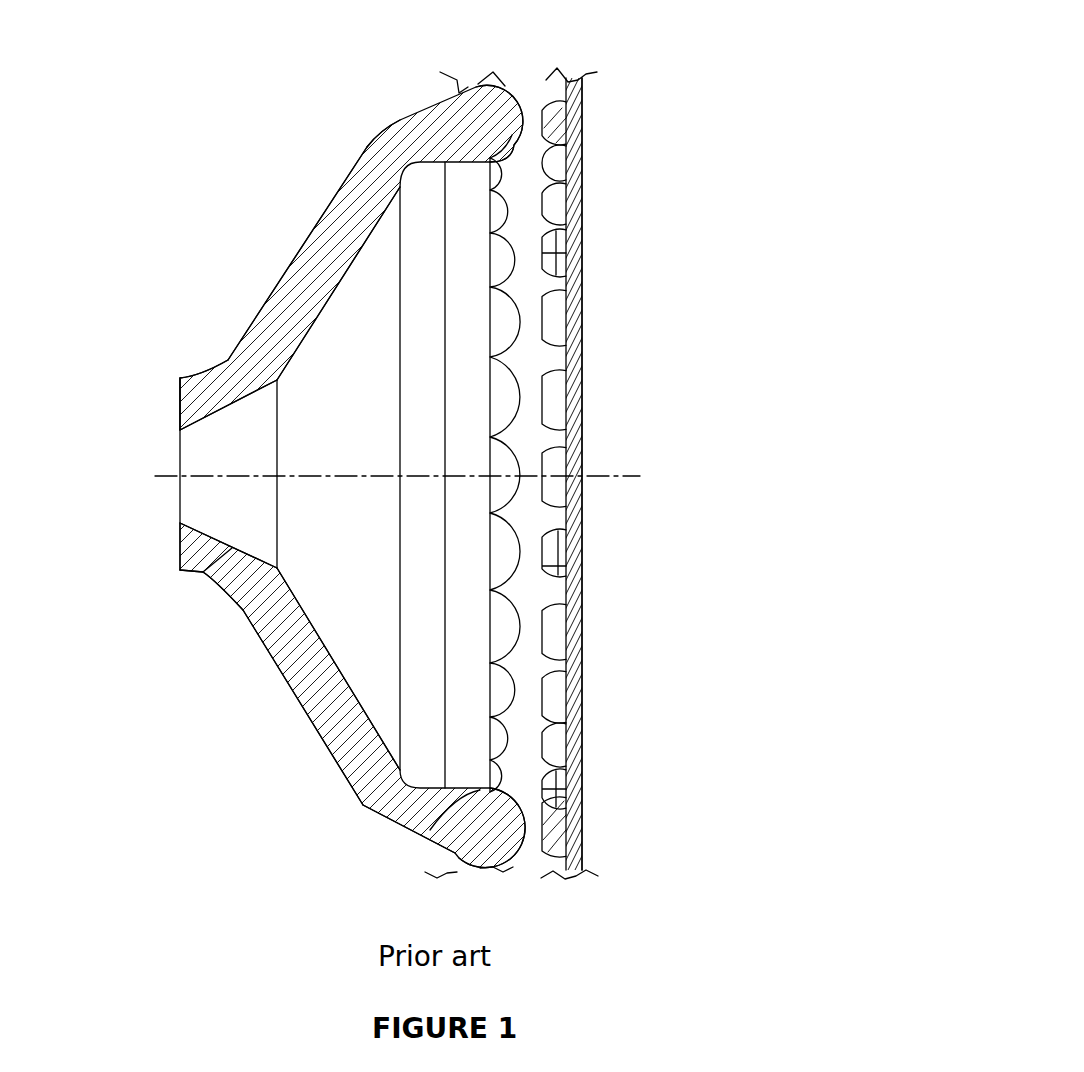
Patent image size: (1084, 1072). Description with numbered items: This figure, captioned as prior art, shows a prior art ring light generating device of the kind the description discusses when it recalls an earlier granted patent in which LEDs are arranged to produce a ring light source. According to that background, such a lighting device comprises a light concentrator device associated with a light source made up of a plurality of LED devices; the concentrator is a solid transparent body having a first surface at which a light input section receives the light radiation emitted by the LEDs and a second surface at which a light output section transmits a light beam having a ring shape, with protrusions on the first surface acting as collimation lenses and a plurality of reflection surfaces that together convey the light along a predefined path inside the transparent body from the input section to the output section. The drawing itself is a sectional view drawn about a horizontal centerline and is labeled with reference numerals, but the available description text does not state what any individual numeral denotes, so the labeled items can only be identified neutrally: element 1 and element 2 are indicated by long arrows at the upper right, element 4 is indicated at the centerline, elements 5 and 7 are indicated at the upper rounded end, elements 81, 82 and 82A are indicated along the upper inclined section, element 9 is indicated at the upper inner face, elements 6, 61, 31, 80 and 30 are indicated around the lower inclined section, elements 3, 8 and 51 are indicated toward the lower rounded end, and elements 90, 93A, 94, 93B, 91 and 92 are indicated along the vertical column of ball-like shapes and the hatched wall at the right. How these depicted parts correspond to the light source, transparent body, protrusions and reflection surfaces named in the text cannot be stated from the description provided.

The nozzle assembly 1 is at (890, 136).
The mounting wall structure 2 is at (796, 333).
The lower conical wall 3 is at (352, 660).
The central axis 4 is at (648, 474).
The upper body portion 5 is at (455, 119).
The inlet hub face 6 is at (152, 533).
The upper rounded flange 7 is at (514, 90).
The lower bend 8 is at (367, 818).
The inner conical surface 9 is at (222, 402).
The inner surface of lower wall 30 is at (312, 616).
The junction line 31 is at (231, 550).
The lower rounded flange 51 is at (482, 752).
The lower hub block 61 is at (178, 561).
The outer surface of lower wall 80 is at (247, 657).
The upper bend 81 is at (384, 127).
The upper conical wall 82 is at (301, 239).
The upper hub block 82A is at (186, 375).
The ball bearing ring 90 is at (600, 479).
The wall outer surface 91 is at (580, 673).
The wall lower end 92 is at (564, 866).
The upper ball 93A is at (562, 396).
The lower ball 93B is at (565, 551).
The support wall 94 is at (581, 437).